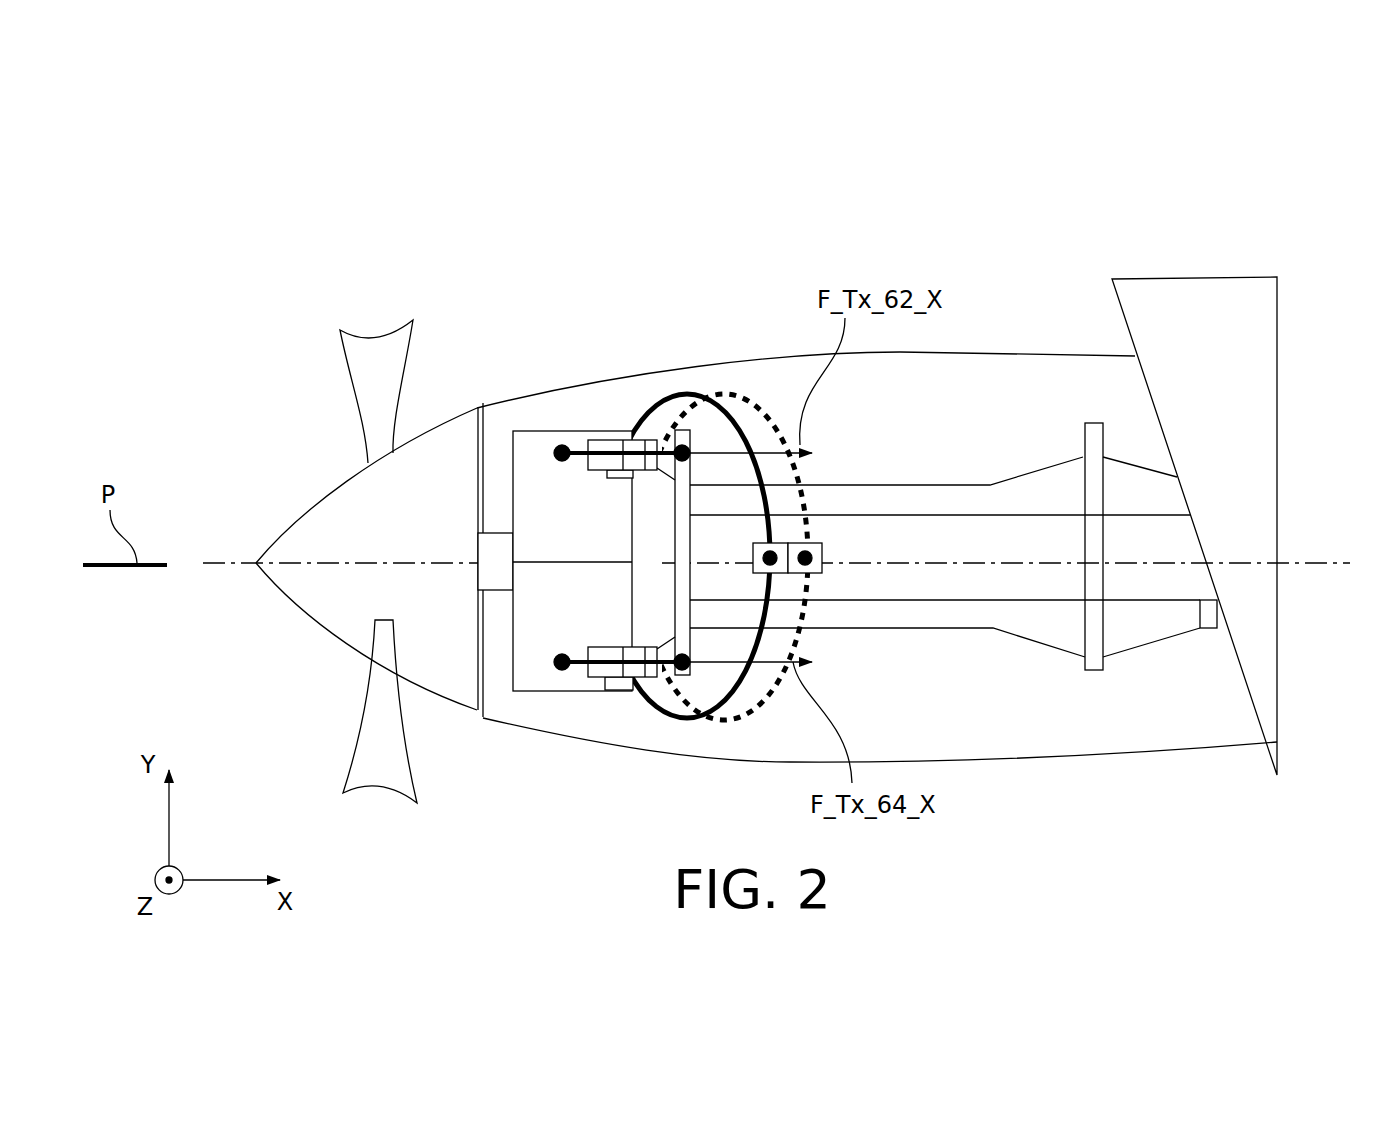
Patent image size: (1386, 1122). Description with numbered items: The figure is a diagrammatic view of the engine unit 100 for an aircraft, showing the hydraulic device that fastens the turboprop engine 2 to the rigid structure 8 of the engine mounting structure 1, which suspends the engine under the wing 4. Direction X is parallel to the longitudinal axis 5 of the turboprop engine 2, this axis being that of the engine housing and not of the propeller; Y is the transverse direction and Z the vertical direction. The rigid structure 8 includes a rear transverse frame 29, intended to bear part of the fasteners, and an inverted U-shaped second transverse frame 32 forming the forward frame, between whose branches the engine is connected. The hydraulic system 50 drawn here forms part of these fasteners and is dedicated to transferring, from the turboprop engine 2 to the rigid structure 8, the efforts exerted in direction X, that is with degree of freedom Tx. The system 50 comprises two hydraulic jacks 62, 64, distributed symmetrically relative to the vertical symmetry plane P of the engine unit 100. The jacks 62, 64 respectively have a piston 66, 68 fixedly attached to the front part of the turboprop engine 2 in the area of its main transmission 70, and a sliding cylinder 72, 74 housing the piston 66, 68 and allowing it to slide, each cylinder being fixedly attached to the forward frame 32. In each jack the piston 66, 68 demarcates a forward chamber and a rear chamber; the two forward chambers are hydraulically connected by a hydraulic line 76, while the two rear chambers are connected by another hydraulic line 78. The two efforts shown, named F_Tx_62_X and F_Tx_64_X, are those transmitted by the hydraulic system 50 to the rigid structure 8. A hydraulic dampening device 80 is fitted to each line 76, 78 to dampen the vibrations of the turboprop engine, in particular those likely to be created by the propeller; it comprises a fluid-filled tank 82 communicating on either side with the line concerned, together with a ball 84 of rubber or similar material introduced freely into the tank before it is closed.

The engine mounting structure 1 is at (990, 608).
The turboprop engine 2 is at (983, 470).
The wing 4 is at (1277, 333).
The longitudinal axis 5 is at (223, 563).
The rigid structure 8 is at (1048, 525).
The rear transverse frame 29 is at (1098, 662).
The second transverse frame 32 is at (683, 602).
The hydraulic system 50 is at (572, 400).
The hydraulic jack 62 is at (613, 480).
The hydraulic jack 64 is at (618, 638).
The piston 66 is at (598, 470).
The piston 68 is at (598, 647).
The main transmission 70 is at (528, 450).
The sliding cylinder 72 is at (639, 433).
The sliding cylinder 74 is at (668, 640).
The hydraulic line 76 is at (668, 397).
The hydraulic line 78 is at (720, 395).
The hydraulic dampening device 80 is at (736, 546).
The tank 82 is at (815, 543).
The ball 84 is at (815, 573).
The engine unit 100 is at (828, 245).